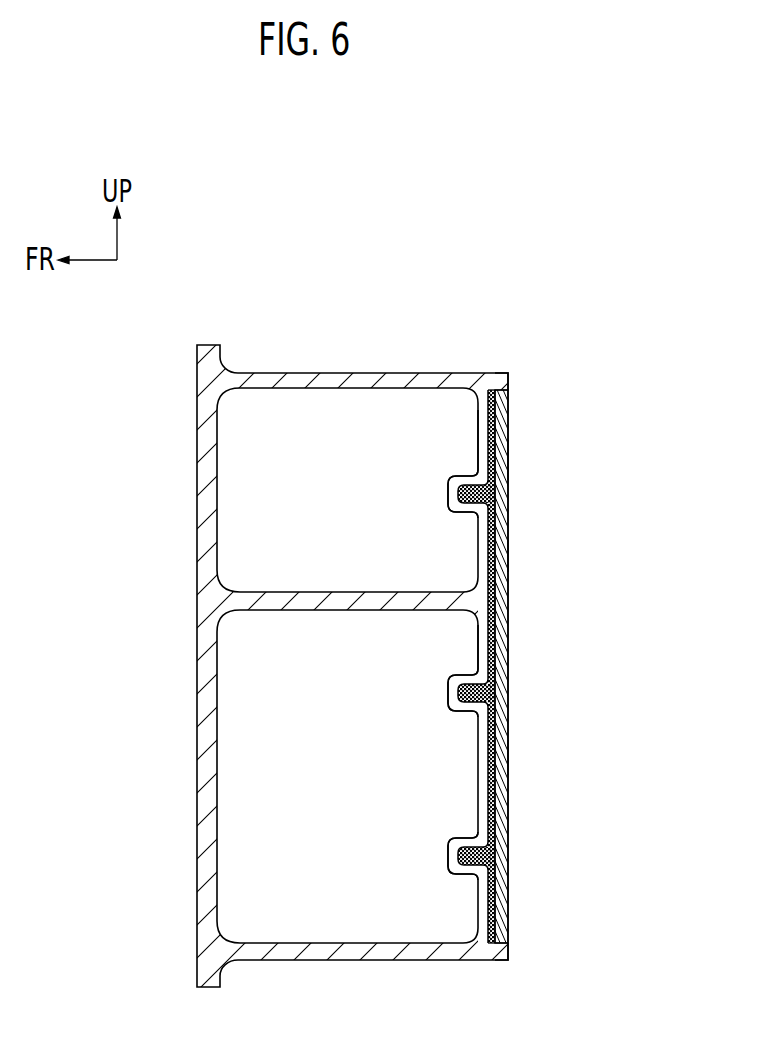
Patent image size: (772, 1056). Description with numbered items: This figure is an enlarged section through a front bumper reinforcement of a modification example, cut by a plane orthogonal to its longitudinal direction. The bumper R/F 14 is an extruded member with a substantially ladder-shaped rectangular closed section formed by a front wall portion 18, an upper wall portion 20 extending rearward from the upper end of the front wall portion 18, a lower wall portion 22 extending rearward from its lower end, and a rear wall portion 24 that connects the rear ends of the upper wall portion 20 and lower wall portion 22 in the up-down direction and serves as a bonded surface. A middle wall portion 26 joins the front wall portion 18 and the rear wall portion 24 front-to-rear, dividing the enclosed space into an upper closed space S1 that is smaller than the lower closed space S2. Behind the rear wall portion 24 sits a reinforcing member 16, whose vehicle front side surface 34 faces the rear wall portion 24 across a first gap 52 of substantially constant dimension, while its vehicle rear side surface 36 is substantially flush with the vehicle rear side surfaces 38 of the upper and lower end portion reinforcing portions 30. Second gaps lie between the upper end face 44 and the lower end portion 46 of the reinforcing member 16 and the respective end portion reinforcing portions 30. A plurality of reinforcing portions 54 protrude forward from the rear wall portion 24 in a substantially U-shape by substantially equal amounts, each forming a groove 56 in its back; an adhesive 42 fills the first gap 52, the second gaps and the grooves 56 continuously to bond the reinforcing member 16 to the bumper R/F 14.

The bumper R/F 14 is at (482, 344).
The reinforcing member 16 is at (509, 620).
The front wall portion 18 is at (198, 672).
The upper wall portion 20 is at (322, 372).
The lower wall portion 22 is at (327, 961).
The rear wall portion 24 is at (477, 434).
The middle wall portion 26 is at (342, 611).
The end portion reinforcing portion 30 is at (503, 372).
The vehicle front side surface 34 is at (508, 556).
The vehicle rear side surface 36 is at (508, 757).
The vehicle rear side surface 38 is at (508, 391).
The adhesive 42 is at (510, 432).
The upper end face 44 is at (510, 390).
The lower end portion 46 is at (500, 945).
The first gap 52 is at (510, 462).
The reinforcing portion 54 is at (449, 492).
The groove 56 is at (498, 489).
The closed space S1 is at (368, 504).
The closed space S2 is at (368, 764).